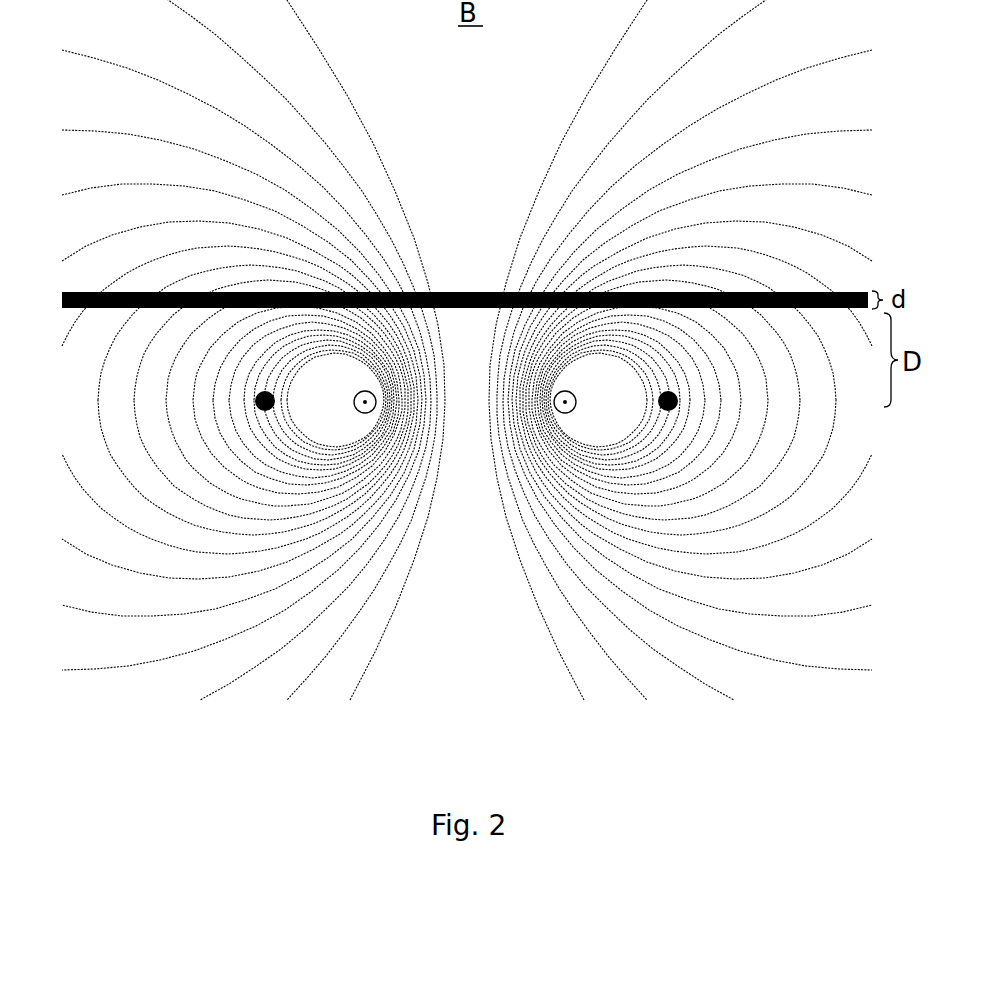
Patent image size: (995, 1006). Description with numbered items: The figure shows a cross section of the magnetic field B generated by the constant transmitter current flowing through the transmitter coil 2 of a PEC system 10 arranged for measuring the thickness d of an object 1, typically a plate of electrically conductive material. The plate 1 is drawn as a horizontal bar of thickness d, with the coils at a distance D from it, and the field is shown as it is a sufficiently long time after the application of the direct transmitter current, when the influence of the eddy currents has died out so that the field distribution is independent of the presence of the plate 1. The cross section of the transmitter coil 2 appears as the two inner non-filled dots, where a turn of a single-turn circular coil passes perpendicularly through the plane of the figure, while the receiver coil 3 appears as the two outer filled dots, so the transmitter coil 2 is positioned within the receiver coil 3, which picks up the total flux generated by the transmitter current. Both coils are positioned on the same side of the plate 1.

The object 1 is at (467, 292).
The transmitter coil 2 is at (366, 400).
The receiver coil 3 is at (256, 402).
The PEC system 10 is at (72, 379).